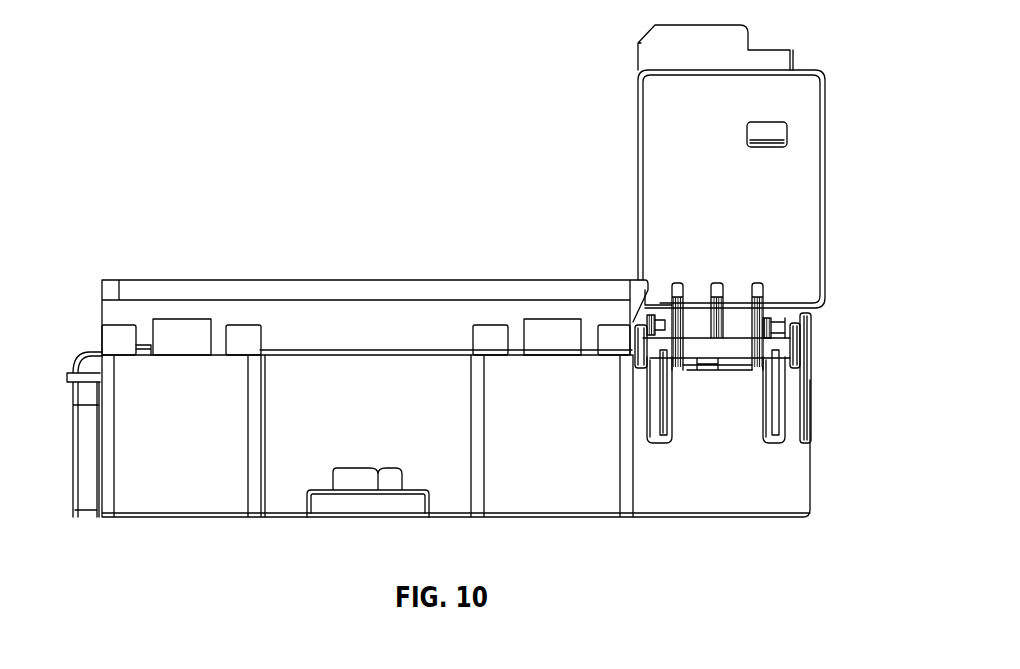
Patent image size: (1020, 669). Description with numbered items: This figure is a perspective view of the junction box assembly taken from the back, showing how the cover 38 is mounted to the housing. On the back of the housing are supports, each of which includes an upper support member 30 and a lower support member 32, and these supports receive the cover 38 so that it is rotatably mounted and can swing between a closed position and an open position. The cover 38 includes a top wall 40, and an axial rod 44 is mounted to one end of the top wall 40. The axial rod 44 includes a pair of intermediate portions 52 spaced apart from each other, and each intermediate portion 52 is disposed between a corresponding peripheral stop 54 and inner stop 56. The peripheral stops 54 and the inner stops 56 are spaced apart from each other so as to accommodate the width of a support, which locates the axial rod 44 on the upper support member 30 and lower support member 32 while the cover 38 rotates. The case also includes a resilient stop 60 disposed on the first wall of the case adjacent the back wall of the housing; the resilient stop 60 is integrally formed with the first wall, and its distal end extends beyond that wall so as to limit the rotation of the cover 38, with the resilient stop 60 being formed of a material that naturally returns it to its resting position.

The upper support member 30 is at (633, 318).
The lower support member 32 is at (655, 372).
The cover 38 is at (835, 125).
The top wall 40 is at (807, 182).
The axial rod 44 is at (739, 326).
The intermediate portion 52 is at (650, 357).
The peripheral stop 54 is at (640, 347).
The inner stop 56 is at (747, 355).
The resilient stop 60 is at (650, 288).